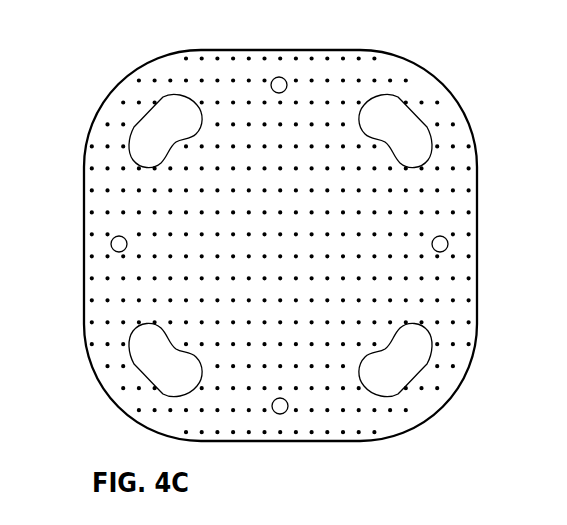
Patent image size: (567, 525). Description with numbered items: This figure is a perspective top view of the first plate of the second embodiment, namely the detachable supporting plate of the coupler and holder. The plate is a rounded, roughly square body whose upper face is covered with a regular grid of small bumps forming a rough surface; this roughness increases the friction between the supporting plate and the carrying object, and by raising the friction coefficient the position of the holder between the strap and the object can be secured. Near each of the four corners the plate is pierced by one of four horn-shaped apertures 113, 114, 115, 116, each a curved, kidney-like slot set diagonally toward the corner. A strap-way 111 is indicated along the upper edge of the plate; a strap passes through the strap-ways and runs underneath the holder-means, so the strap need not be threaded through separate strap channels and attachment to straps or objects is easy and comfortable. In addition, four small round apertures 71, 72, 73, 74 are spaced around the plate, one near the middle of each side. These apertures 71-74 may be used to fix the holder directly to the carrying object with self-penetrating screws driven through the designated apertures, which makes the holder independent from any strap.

The strap-way 111 is at (357, 73).
The aperture 71 is at (120, 243).
The aperture 72 is at (281, 77).
The aperture 73 is at (440, 244).
The aperture 74 is at (281, 408).
The horn-shaped aperture 113 is at (168, 113).
The horn-shaped aperture 114 is at (397, 123).
The horn-shaped aperture 115 is at (403, 363).
The horn-shaped aperture 116 is at (148, 352).